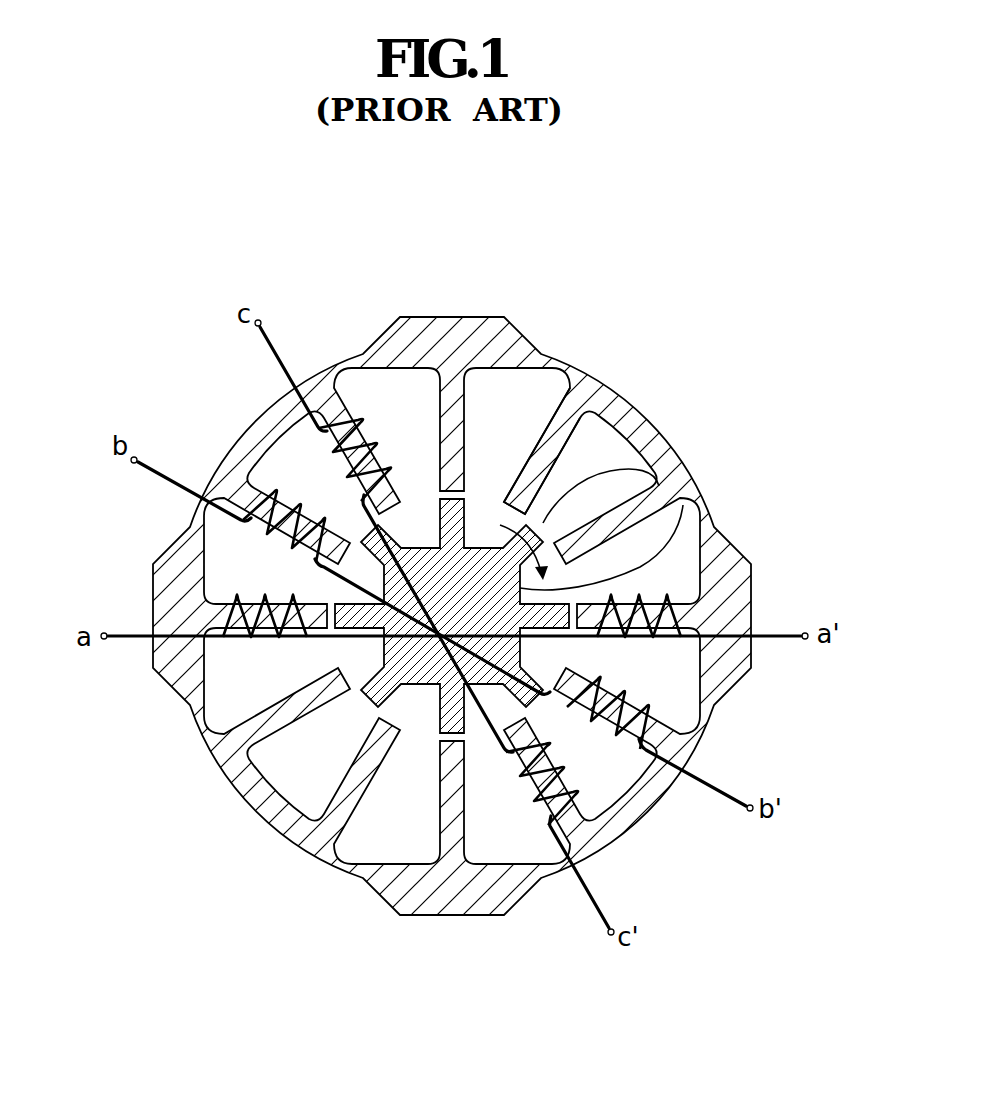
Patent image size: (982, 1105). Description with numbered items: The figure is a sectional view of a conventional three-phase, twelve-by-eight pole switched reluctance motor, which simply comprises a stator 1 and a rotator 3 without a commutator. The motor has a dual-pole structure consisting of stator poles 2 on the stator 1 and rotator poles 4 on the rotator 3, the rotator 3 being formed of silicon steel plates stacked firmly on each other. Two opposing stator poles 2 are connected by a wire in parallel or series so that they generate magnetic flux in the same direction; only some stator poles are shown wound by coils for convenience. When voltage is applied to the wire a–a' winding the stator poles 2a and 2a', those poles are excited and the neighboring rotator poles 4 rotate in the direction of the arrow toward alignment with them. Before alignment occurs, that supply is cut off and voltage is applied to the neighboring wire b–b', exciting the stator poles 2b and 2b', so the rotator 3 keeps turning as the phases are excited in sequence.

The stator 1 is at (523, 338).
The stator pole 2 is at (595, 412).
The rotator 3 is at (672, 542).
The rotator pole 4 is at (650, 471).
The stator pole 2a is at (188, 575).
The stator pole 2a' is at (727, 591).
The stator pole 2b is at (254, 455).
The stator pole 2b' is at (700, 714).